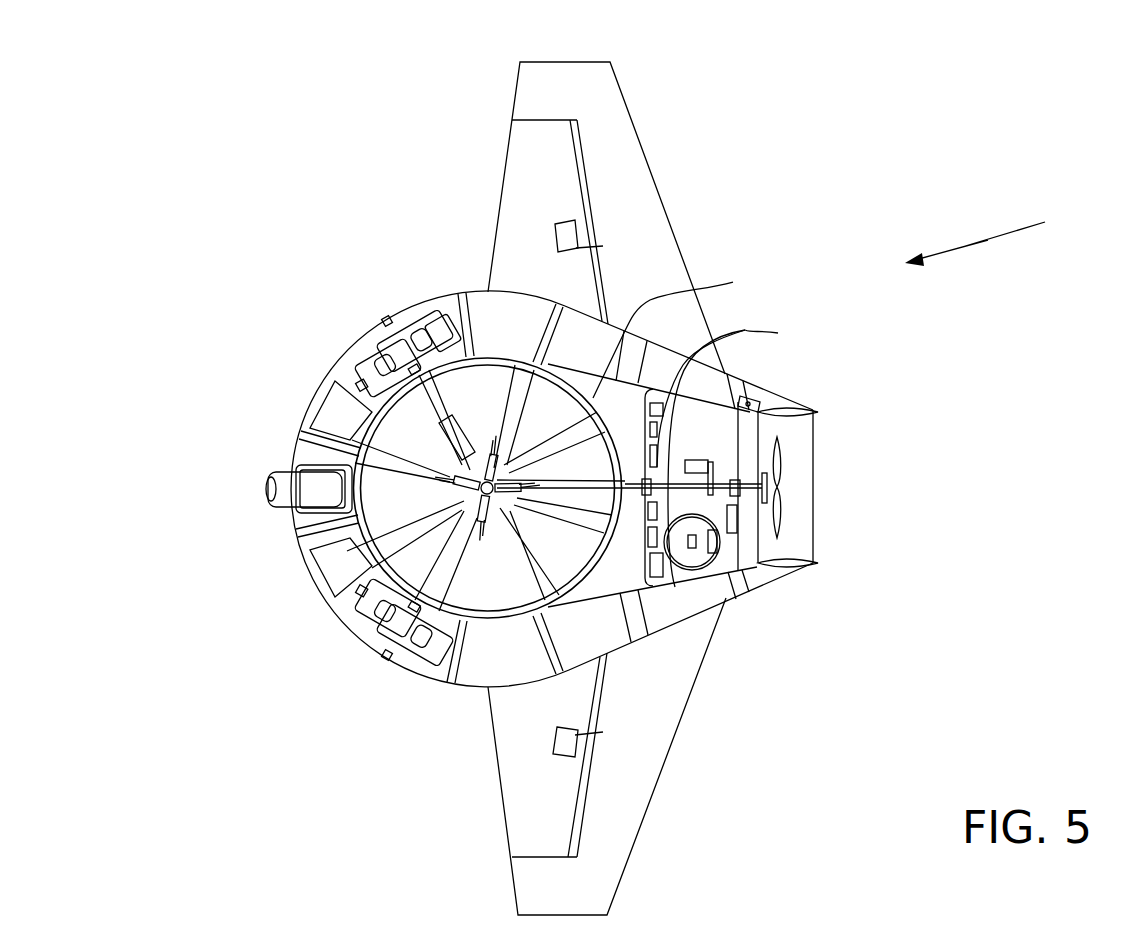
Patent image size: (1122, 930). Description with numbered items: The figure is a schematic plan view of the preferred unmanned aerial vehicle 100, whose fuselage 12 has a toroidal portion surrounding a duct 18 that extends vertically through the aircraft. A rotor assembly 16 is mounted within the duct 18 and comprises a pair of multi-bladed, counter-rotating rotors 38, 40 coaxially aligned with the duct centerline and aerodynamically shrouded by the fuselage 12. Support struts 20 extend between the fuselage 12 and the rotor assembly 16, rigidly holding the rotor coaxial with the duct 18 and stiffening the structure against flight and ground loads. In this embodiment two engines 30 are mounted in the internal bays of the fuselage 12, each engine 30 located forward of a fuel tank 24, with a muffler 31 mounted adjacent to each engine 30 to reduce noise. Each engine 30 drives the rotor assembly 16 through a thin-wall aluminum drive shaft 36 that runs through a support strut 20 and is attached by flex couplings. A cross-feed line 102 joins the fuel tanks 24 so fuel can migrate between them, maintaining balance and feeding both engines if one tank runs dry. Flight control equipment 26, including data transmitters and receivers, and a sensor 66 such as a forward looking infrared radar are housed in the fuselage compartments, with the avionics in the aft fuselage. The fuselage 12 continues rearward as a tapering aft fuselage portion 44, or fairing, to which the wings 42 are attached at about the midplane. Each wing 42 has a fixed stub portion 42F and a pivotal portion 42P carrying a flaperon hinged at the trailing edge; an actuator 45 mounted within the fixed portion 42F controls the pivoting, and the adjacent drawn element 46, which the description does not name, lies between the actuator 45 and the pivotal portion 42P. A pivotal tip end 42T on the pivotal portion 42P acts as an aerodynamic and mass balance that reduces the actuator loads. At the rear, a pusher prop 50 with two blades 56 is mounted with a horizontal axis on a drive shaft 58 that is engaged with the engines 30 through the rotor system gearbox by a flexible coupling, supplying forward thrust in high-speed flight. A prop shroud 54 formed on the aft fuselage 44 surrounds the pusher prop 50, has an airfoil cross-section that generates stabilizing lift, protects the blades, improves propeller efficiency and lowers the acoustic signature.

The fuselage 12 is at (408, 690).
The rotor assembly 16 is at (495, 532).
The duct 18 is at (502, 612).
The support strut 20 is at (440, 428).
The fuel tank 24 is at (478, 667).
The flight control equipment 26 is at (734, 454).
The engine 30 is at (375, 327).
The muffler 31 is at (330, 408).
The drive shaft 36 is at (428, 315).
The rotor 38 is at (510, 410).
The rotor 40 is at (565, 438).
The wing 42 is at (665, 805).
The pivotal tip end 42T is at (540, 92).
The fixed stub portion 42F is at (530, 155).
The pivotal portion 42P is at (607, 142).
The aft fuselage portion 44 is at (677, 627).
The actuator 45 is at (553, 238).
The flap control rod 46 is at (600, 247).
The pusher prop 50 is at (803, 519).
The prop shroud 54 is at (800, 570).
The blade 56 is at (783, 470).
The drive shaft 58 is at (720, 483).
The sensor 66 is at (240, 490).
The unmanned aerial vehicle 100 is at (1001, 238).
The cross-feed line 102 is at (687, 333).